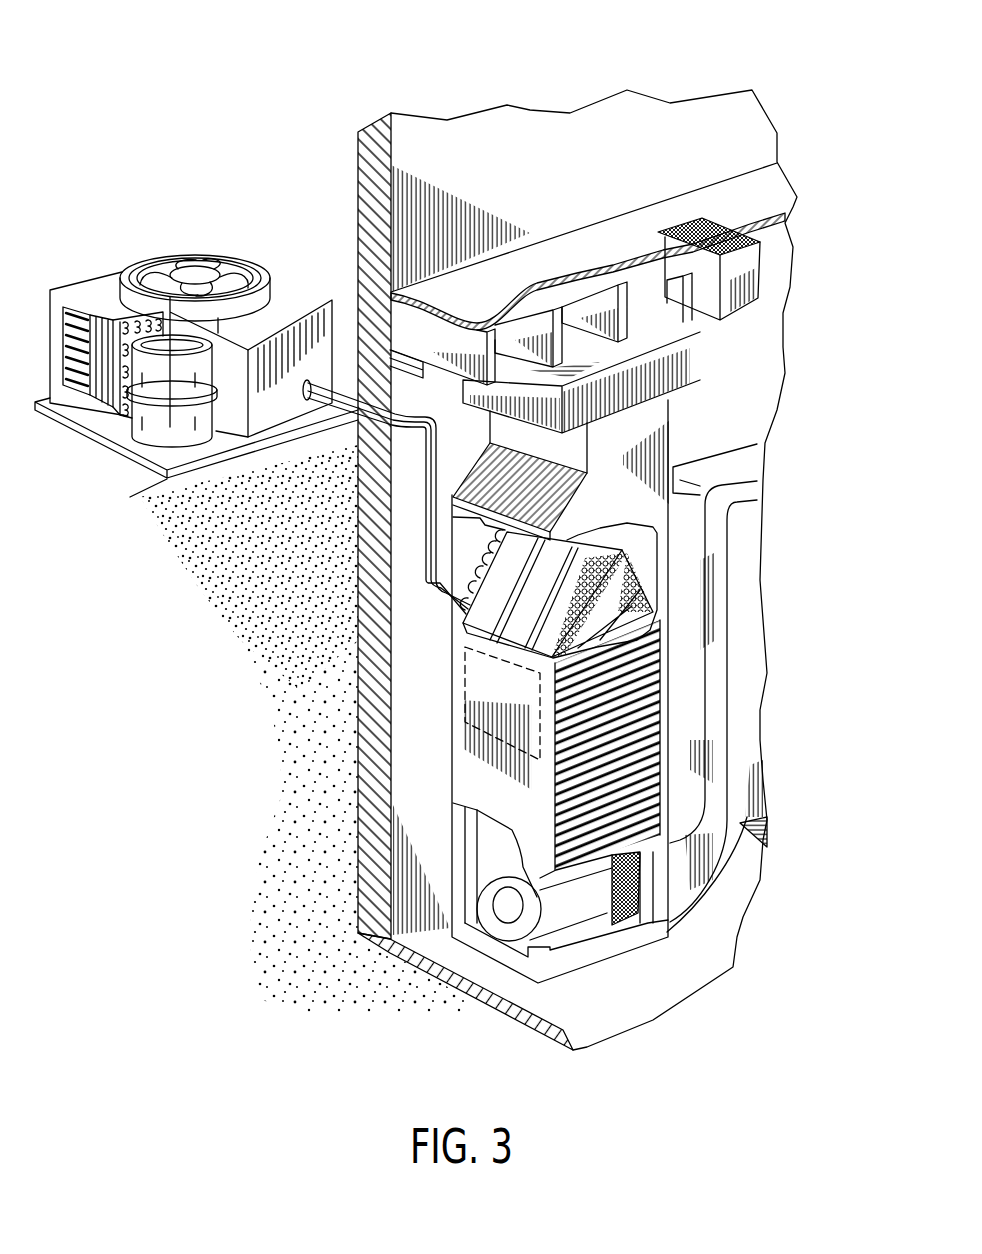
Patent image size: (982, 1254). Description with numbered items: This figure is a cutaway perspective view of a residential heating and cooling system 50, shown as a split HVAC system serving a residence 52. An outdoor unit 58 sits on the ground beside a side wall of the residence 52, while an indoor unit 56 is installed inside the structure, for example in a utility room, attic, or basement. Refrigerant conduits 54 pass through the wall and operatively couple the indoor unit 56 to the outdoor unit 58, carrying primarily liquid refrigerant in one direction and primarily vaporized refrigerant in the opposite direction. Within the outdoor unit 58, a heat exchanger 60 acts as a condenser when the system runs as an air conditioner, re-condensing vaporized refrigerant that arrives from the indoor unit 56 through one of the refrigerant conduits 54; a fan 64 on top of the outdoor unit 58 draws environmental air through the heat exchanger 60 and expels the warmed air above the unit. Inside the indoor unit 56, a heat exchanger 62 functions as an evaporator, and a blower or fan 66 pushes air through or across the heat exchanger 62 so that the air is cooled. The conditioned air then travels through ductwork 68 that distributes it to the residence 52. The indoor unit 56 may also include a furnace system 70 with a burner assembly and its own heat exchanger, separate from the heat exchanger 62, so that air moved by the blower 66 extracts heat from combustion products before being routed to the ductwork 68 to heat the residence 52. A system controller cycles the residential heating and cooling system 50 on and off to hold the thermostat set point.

The residential heating and cooling system 50 is at (188, 86).
The residence 52 is at (492, 137).
The refrigerant conduits 54 is at (423, 505).
The indoor unit 56 is at (433, 744).
The outdoor unit 58 is at (151, 247).
The heat exchanger 60 is at (128, 318).
The heat exchanger 62 is at (512, 618).
The fan 64 is at (212, 260).
The blower or fan 66 is at (503, 927).
The ductwork 68 is at (735, 320).
The furnace system 70 is at (463, 703).